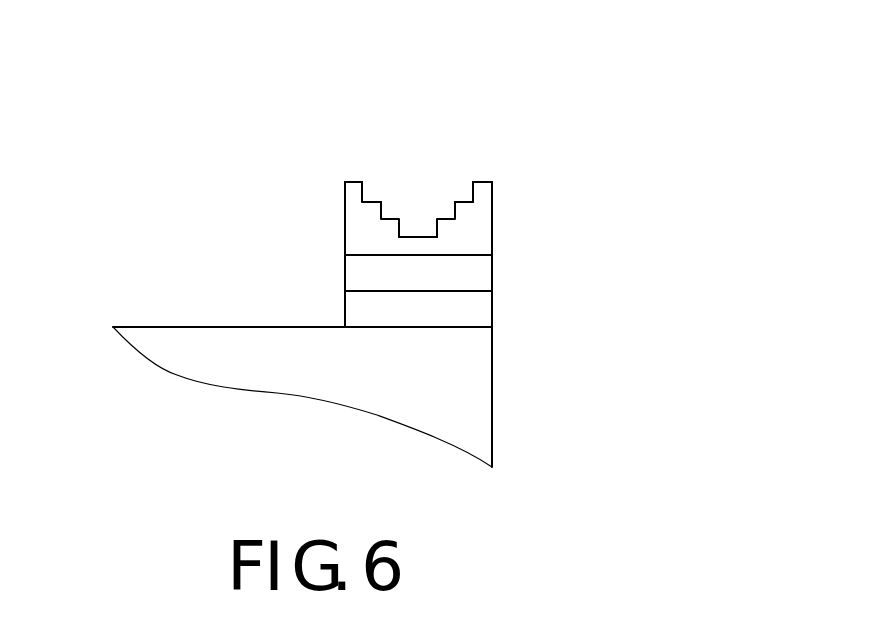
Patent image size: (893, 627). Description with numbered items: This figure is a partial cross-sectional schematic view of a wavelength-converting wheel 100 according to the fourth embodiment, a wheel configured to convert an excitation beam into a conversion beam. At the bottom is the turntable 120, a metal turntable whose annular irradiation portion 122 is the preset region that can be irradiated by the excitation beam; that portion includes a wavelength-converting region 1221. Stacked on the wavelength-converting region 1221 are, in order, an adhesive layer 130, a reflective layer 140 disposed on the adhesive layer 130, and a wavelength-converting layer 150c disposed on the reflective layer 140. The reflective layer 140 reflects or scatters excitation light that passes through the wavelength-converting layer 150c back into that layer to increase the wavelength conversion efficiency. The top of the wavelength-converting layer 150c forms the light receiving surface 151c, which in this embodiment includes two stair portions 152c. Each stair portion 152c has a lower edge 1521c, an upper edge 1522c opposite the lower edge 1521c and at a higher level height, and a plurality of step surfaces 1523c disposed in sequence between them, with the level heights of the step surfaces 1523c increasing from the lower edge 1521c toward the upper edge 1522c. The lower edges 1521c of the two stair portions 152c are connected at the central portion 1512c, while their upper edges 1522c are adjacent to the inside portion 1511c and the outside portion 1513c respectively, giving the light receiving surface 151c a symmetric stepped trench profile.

The wavelength-converting wheel 100 is at (168, 127).
The turntable 120 is at (472, 387).
The annular irradiation portion 122 is at (470, 325).
The wavelength-converting region 1221 is at (452, 326).
The adhesive layer 130 is at (360, 310).
The reflective layer 140 is at (360, 275).
The wavelength-converting layer 150c is at (362, 228).
The light receiving surface 151c is at (345, 161).
The inside portion 1511c is at (348, 182).
The central portion 1512c is at (412, 233).
The outside portion 1513c is at (490, 180).
The stair portion 152c is at (620, 17).
The lower edge 1521c is at (428, 233).
The upper edge 1522c is at (480, 182).
The step surface 1523c is at (465, 198).